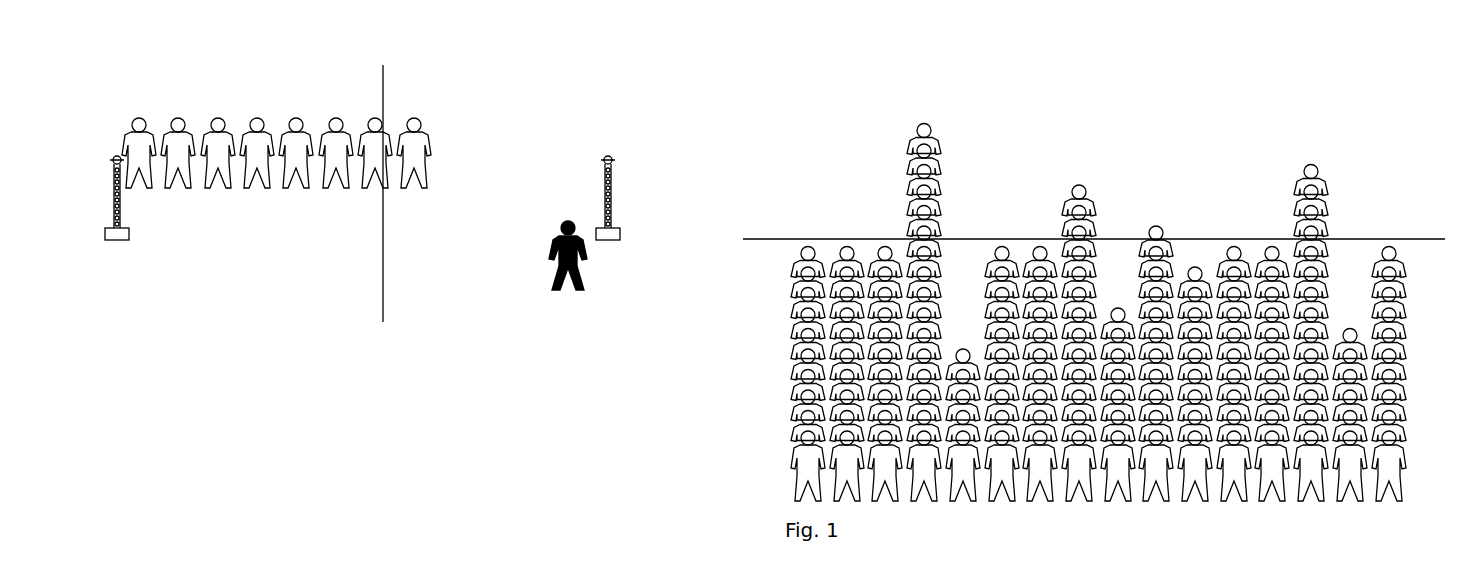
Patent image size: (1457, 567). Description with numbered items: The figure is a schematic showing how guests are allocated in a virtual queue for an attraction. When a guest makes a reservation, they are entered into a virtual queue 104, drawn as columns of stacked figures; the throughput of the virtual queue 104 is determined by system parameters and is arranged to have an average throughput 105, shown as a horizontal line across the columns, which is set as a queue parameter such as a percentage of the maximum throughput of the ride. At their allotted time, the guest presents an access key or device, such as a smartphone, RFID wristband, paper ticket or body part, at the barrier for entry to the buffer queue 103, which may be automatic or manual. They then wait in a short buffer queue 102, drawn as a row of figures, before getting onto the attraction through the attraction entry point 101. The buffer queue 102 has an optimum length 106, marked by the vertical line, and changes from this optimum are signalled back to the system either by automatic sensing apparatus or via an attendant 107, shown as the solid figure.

The attraction entry point 101 is at (123, 240).
The buffer queue 102 is at (257, 188).
The barrier for entry to the buffer queue 103 is at (619, 197).
The virtual queue 104 is at (948, 193).
The average throughput 105 is at (1122, 238).
The optimum length 106 is at (384, 250).
The attendant 107 is at (567, 221).